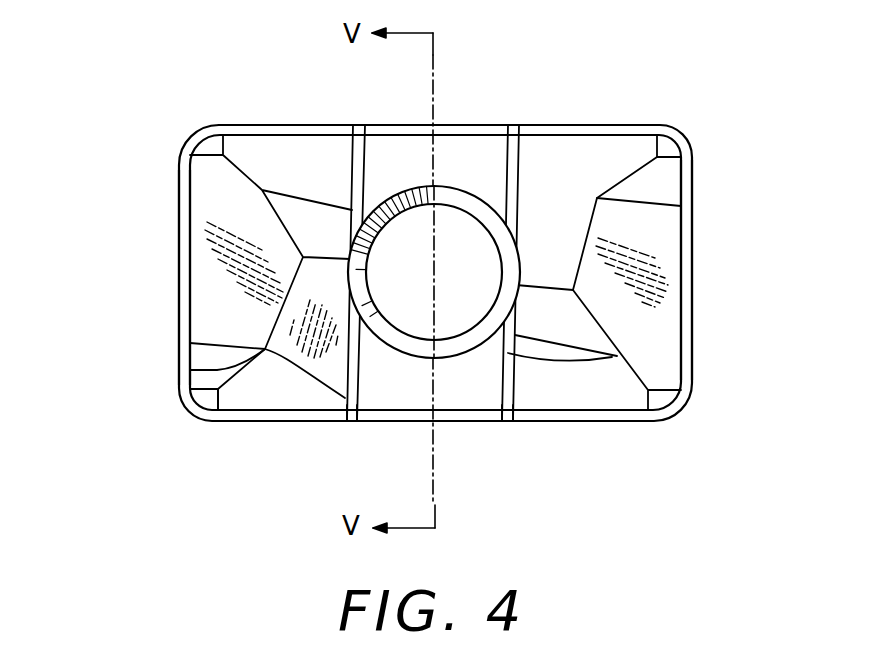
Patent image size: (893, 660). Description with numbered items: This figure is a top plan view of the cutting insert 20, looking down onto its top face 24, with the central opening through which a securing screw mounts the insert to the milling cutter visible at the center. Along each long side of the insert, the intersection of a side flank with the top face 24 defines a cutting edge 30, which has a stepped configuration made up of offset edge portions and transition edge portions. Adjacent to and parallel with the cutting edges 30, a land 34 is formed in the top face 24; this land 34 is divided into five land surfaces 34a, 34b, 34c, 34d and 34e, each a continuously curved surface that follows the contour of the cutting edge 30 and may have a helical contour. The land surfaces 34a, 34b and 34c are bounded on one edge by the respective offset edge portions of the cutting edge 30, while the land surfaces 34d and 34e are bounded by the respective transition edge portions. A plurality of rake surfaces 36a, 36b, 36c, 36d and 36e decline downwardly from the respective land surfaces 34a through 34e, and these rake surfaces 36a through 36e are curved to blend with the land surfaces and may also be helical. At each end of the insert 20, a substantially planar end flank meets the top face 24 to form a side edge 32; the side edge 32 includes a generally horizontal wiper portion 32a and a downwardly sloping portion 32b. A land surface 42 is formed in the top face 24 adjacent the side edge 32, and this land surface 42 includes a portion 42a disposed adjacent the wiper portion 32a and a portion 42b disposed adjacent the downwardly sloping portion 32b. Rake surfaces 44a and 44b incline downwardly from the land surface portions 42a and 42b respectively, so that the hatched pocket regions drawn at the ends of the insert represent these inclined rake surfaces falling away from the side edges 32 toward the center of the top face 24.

The cutting insert 20 is at (178, 135).
The top face 24 is at (228, 198).
The cutting edge 30 is at (272, 127).
The side edge 32 is at (178, 349).
The wiper portion 32a is at (178, 370).
The downwardly sloping portion 32b is at (178, 237).
The land 34 is at (480, 127).
The land surface 34a is at (307, 417).
The land surface 34b is at (397, 417).
The land surface 34c is at (603, 416).
The land surface 34d is at (352, 420).
The land surface 34e is at (507, 417).
The rake surface 36a is at (238, 400).
The rake surface 36b is at (472, 400).
The rake surface 36c is at (620, 385).
The rake surface 36d is at (195, 372).
The rake surface 36e is at (618, 356).
The land surface 42 is at (687, 213).
The land surface portion 42a is at (683, 165).
The land surface portion 42b is at (687, 235).
The rake surface 44a is at (633, 182).
The rake surface 44b is at (663, 285).